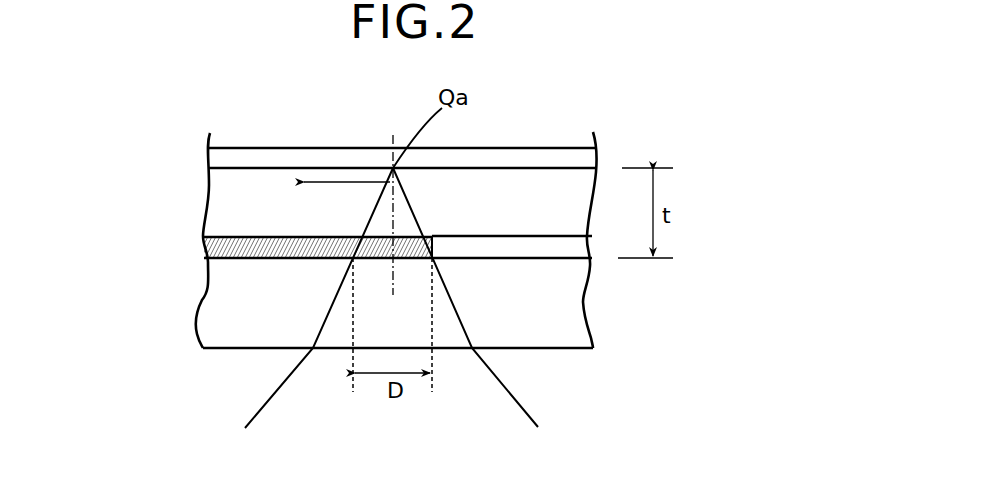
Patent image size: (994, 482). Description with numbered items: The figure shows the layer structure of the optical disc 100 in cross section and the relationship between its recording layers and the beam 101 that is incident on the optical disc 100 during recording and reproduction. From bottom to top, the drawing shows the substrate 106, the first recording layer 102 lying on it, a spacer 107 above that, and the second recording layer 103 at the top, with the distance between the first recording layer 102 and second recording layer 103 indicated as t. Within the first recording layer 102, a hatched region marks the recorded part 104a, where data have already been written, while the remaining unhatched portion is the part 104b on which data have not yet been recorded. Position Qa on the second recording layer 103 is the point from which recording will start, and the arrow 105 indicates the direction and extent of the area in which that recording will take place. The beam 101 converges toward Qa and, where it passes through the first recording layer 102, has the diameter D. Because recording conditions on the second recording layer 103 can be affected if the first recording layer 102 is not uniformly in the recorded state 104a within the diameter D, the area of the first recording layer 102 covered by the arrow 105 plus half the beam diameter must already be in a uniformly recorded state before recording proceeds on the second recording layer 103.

The optical disc 100 is at (226, 354).
The beam 101 is at (522, 400).
The first recording layer 102 is at (513, 231).
The second recording layer 103 is at (250, 145).
The recorded part of the first recording layer 104a is at (263, 249).
The unrecorded part of the first recording layer 104b is at (545, 247).
The arrow 105 is at (352, 182).
The substrate 106 is at (215, 318).
The spacer 107 is at (240, 212).